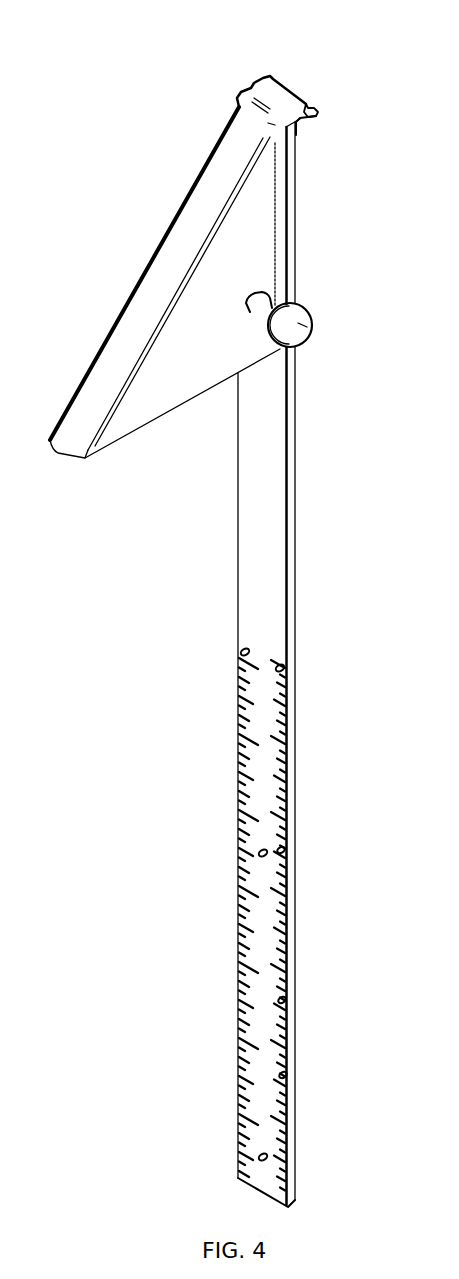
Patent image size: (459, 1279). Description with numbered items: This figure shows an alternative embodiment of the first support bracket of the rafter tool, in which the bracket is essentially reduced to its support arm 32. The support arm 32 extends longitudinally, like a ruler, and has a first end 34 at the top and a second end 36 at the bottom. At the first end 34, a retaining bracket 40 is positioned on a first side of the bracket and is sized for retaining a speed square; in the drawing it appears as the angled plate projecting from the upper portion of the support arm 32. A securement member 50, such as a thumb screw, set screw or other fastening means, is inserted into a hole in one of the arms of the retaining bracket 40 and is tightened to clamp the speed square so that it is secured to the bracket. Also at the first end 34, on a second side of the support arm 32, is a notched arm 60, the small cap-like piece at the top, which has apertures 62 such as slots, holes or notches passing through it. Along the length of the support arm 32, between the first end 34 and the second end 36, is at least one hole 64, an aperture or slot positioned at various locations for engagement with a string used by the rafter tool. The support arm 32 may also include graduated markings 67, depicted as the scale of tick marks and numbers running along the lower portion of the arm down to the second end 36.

The support arm 32 is at (265, 490).
The first end 34 is at (297, 243).
The second end 36 is at (297, 1150).
The retaining bracket 40 is at (207, 302).
The securement member 50 is at (300, 324).
The notched arm 60 is at (250, 92).
The apertures 62 is at (317, 113).
The hole 64 is at (285, 662).
The graduated markings 67 is at (288, 758).